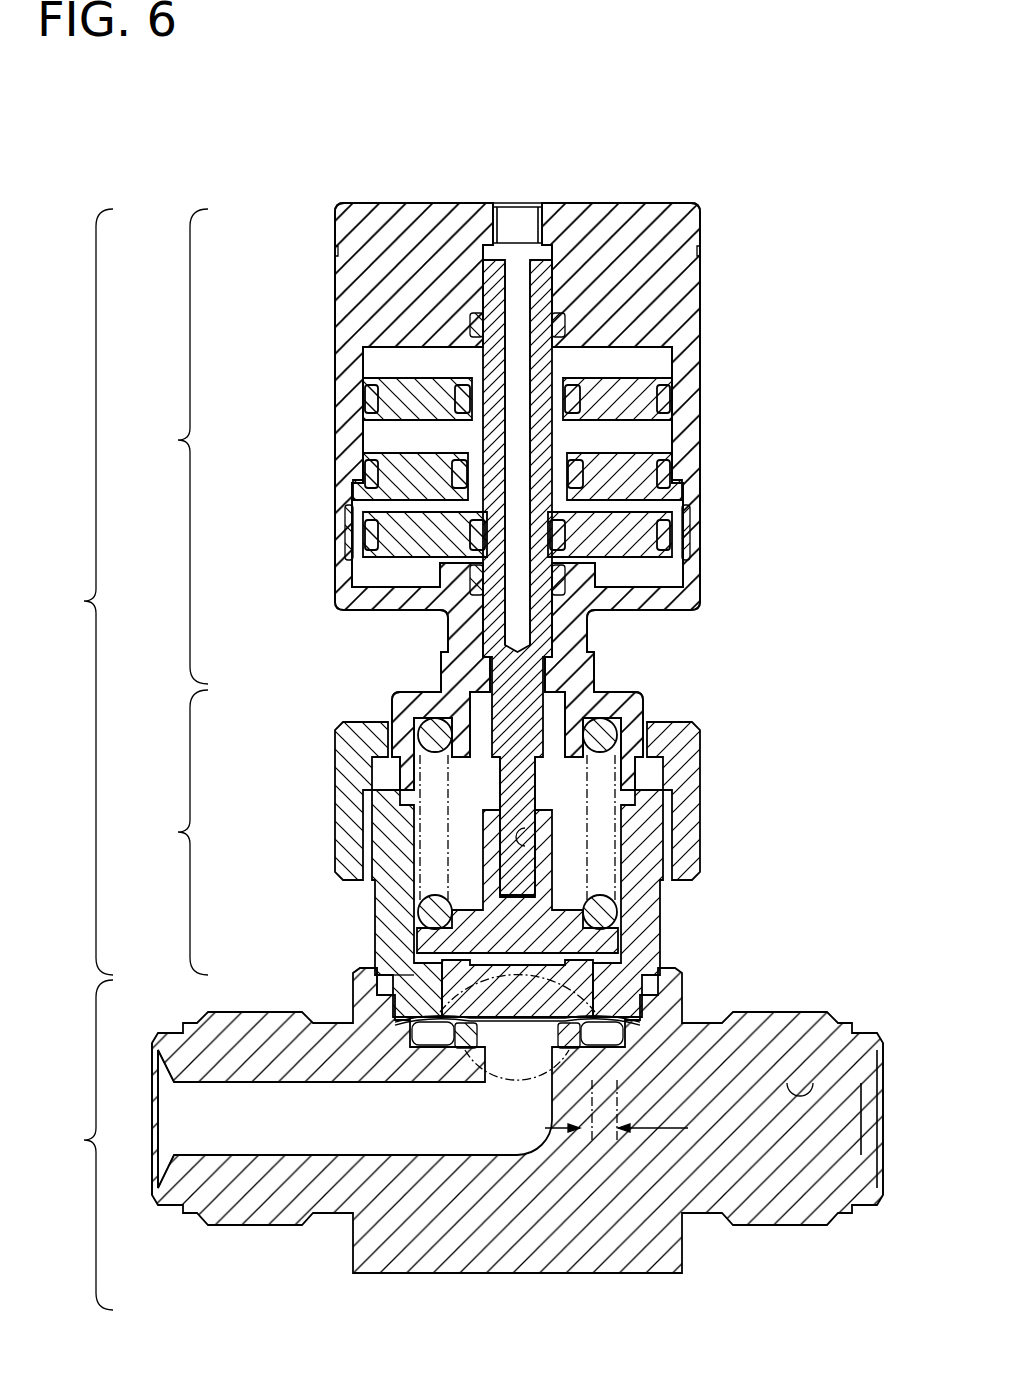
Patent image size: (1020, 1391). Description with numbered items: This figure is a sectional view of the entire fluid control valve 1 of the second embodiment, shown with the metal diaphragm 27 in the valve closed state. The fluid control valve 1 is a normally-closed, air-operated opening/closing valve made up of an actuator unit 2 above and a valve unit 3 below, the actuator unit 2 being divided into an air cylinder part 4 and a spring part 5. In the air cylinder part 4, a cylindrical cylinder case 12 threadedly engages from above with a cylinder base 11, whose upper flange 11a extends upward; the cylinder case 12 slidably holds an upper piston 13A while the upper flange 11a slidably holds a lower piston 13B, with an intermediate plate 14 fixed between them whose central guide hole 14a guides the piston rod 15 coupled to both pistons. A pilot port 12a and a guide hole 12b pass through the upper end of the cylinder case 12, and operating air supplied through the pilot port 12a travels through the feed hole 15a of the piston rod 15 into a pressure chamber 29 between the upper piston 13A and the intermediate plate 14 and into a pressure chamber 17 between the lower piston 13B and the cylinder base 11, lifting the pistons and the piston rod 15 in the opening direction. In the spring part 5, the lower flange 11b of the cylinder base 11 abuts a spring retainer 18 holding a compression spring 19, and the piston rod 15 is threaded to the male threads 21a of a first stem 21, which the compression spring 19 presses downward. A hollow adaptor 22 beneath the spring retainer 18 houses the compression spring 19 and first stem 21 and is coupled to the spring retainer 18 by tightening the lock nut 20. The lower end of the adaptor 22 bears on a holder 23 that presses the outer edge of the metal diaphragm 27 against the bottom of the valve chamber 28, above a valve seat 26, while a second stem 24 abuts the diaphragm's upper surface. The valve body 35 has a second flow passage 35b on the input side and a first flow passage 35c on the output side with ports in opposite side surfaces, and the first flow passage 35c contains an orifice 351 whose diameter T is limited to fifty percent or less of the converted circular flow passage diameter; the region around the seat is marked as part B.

The fluid control valve 1 is at (734, 207).
The actuator unit 2 is at (83, 592).
The valve unit 3 is at (83, 1145).
The air cylinder part 4 is at (179, 446).
The spring part 5 is at (179, 832).
The cylinder base 11 is at (655, 620).
The upper flange 11a is at (350, 540).
The lower flange 11b is at (597, 660).
The cylinder case 12 is at (628, 238).
The pilot port 12a is at (502, 222).
The guide hole 12b is at (537, 268).
The upper piston 13A is at (623, 388).
The lower piston 13B is at (632, 517).
The intermediate plate 14 is at (638, 463).
The guide hole 14a is at (372, 432).
The piston rod 15 is at (556, 335).
The feed hole 15a is at (508, 307).
The pressure chamber 17 is at (648, 578).
The spring retainer 18 is at (567, 743).
The compression spring 19 is at (608, 718).
The lock nut 20 is at (690, 772).
The first stem 21 is at (553, 917).
The male threads 21a is at (523, 832).
The adaptor 22 is at (648, 925).
The holder 23 is at (637, 953).
The second stem 24 is at (612, 1030).
The valve seat 26 is at (400, 976).
The metal diaphragm 27 is at (403, 1030).
The valve chamber 28 is at (432, 1042).
The pressure chamber 29 is at (638, 433).
The valve body 35 is at (381, 1257).
The second flow passage 35b is at (183, 1090).
The first flow passage 35c is at (820, 1082).
The orifice 351 is at (622, 1035).
The part B is at (517, 1075).
The diameter of the orifice T is at (616, 1111).